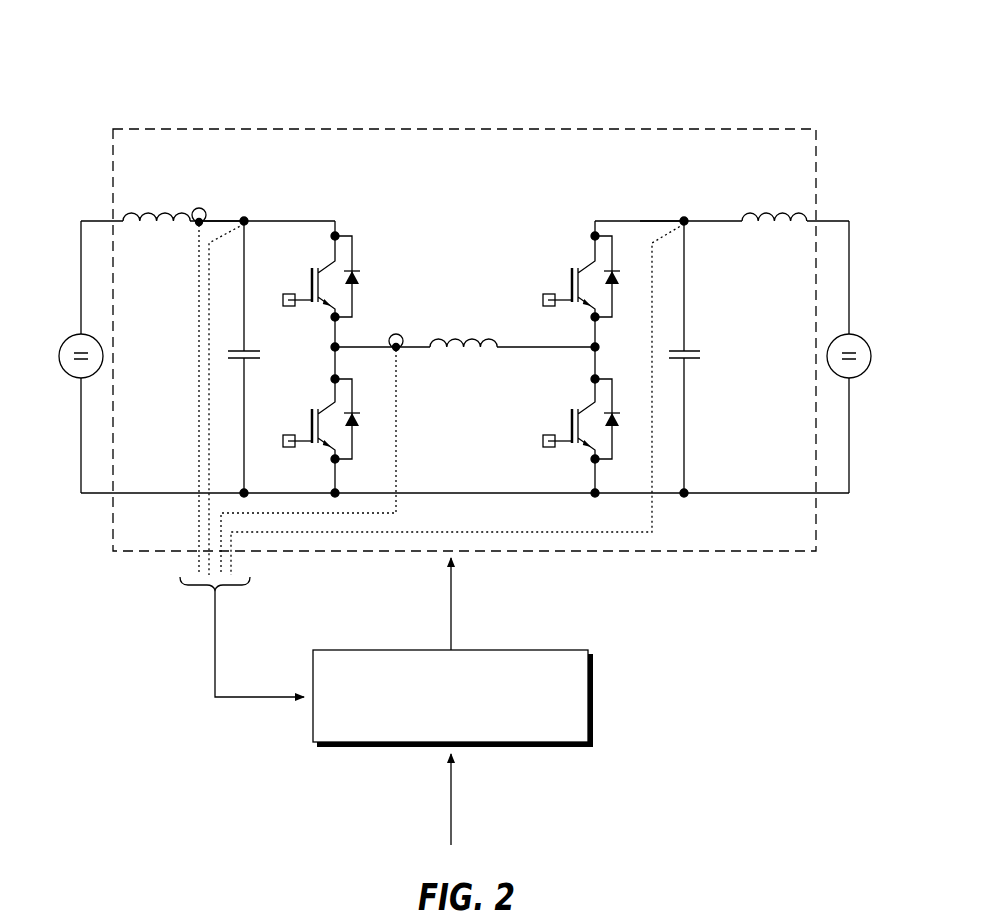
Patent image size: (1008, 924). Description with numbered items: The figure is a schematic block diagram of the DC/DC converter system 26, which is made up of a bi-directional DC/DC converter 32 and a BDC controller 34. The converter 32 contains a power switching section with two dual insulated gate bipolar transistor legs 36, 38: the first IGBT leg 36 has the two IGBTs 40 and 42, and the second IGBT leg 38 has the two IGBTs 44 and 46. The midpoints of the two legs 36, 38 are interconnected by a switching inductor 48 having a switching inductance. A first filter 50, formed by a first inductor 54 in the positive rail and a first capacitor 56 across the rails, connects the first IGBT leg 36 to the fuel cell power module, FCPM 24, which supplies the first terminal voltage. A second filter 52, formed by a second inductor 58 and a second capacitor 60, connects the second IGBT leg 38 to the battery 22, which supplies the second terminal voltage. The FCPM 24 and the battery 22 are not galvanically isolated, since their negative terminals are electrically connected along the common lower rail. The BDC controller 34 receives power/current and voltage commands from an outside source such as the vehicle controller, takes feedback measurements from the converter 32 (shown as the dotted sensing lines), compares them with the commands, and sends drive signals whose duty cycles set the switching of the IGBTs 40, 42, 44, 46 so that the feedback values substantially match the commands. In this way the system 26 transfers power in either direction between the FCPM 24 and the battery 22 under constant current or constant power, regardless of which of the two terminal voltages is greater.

The DC/DC converter system 26 is at (558, 39).
The bi-directional DC/DC converter 32 is at (298, 129).
The first filter 50 is at (234, 204).
The second filter 52 is at (656, 206).
The FCPM 24 is at (73, 332).
The battery 22 is at (855, 386).
The first inductor 54 is at (158, 225).
The second inductor 58 is at (773, 225).
The switching inductor 48 is at (462, 352).
The first capacitor 56 is at (264, 355).
The second capacitor 60 is at (705, 355).
The first IGBT leg 36 is at (360, 325).
The second IGBT leg 38 is at (544, 325).
The IGBT 40 is at (310, 283).
The IGBT 42 is at (310, 426).
The IGBT 44 is at (572, 285).
The IGBT 46 is at (572, 428).
The BDC controller 34 is at (594, 690).